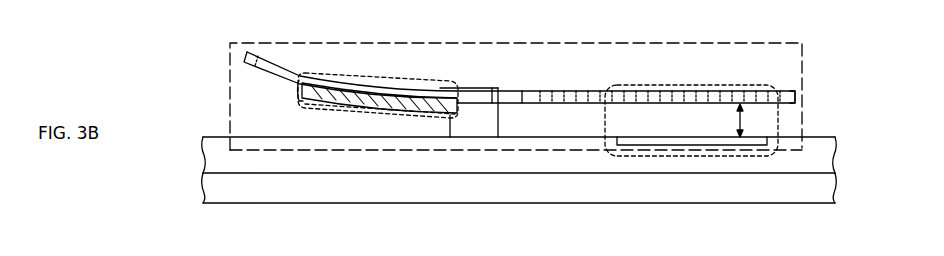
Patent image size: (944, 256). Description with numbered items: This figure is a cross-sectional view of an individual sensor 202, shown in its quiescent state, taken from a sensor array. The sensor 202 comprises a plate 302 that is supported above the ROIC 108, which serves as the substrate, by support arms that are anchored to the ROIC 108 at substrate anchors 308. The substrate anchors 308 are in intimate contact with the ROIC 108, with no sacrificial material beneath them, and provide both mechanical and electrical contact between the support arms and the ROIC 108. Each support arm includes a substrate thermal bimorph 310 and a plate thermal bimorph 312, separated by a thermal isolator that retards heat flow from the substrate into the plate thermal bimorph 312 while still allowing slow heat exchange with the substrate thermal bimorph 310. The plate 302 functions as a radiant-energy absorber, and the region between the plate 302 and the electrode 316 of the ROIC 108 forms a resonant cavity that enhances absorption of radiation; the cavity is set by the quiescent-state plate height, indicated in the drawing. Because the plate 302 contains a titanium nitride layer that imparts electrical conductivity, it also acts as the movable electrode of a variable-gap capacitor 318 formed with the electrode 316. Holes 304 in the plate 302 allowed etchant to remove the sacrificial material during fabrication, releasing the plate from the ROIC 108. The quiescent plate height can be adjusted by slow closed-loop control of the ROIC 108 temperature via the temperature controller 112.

The ROIC 108 is at (202, 163).
The temperature controller 112 is at (202, 190).
The sensor 202 is at (230, 52).
The plate 302 is at (795, 92).
The holes 304 is at (547, 95).
The substrate anchors 308 is at (475, 132).
The substrate thermal bimorph 310 is at (306, 105).
The plate thermal bimorph 312 is at (412, 78).
The electrode 316 is at (687, 142).
The variable-gap capacitor 318 is at (685, 83).